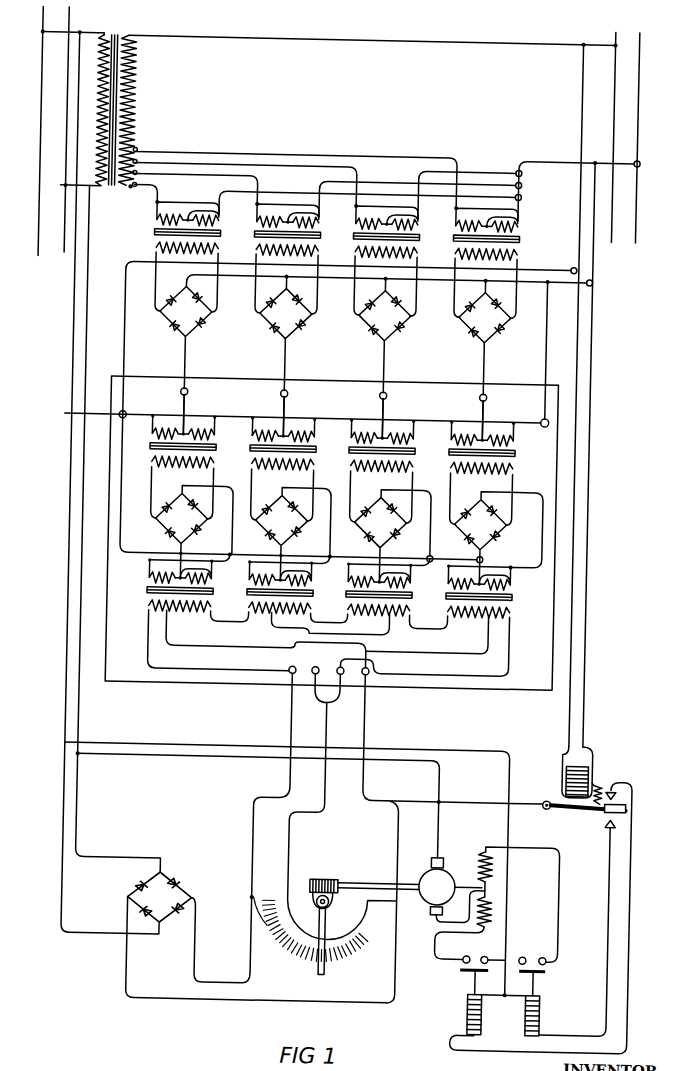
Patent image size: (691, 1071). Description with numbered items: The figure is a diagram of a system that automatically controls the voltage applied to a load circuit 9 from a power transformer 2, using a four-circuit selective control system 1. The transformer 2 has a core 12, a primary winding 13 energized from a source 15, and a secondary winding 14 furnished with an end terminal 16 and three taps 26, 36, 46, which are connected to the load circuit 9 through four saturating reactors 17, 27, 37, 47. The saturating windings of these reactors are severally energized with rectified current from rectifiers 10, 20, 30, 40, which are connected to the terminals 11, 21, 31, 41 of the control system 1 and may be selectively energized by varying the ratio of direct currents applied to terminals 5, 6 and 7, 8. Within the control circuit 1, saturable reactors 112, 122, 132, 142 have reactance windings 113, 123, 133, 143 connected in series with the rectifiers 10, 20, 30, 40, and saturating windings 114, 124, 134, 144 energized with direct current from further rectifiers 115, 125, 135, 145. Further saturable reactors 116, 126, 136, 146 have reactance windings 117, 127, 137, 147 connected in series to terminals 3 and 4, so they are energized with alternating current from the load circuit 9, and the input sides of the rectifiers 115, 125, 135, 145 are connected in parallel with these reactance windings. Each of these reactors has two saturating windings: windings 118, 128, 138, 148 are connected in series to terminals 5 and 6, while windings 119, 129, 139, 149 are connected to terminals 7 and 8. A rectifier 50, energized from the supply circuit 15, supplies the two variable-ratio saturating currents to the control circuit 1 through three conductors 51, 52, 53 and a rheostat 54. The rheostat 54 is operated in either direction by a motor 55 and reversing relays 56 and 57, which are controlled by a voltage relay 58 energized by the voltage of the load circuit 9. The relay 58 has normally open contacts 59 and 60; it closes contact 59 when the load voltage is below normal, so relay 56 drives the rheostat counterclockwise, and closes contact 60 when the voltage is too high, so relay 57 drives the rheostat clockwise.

The selective control system 1 is at (598, 346).
The power transformer 2 is at (114, 33).
The terminal 3 is at (294, 417).
The terminal 4 is at (547, 419).
The terminal 5 is at (289, 680).
The terminal 6 is at (315, 677).
The terminal 7 is at (348, 679).
The terminal 8 is at (373, 679).
The load circuit 9 is at (632, 136).
The rectifier 10 is at (185, 337).
The terminal 11 is at (187, 395).
The core 12 is at (121, 196).
The primary winding 13 is at (89, 90).
The secondary winding 14 is at (368, 115).
The source 15 is at (26, 131).
The end terminal 16 is at (130, 188).
The saturating reactor 17 is at (337, 253).
The rectifier 20 is at (285, 339).
The terminal 21 is at (287, 395).
The tap 26 is at (130, 176).
The saturating reactor 27 is at (387, 248).
The rectifier 30 is at (384, 341).
The terminal 31 is at (386, 395).
The tap 36 is at (130, 165).
The saturating reactor 37 is at (437, 242).
The rectifier 40 is at (484, 343).
The terminal 41 is at (486, 395).
The tap 46 is at (130, 153).
The saturating reactor 47 is at (546, 239).
The rectifier 50 is at (159, 896).
The conductor 51 is at (241, 828).
The conductor 52 is at (344, 807).
The conductor 53 is at (336, 838).
The rheostat 54 is at (335, 916).
The motor 55 is at (488, 904).
The reversing relay 56 is at (545, 932).
The reversing relay 57 is at (536, 916).
The voltage relay 58 is at (627, 755).
The contact 59 is at (625, 819).
The contact 60 is at (627, 790).
The saturable reactor 112 is at (149, 450).
The reactance winding 113 is at (180, 435).
The saturating winding 114 is at (182, 493).
The rectifier 115 is at (193, 532).
The saturable reactor 116 is at (150, 599).
The reactance winding 117 is at (191, 575).
The saturating winding 118 is at (150, 606).
The saturating winding 119 is at (150, 659).
The saturable reactor 122 is at (269, 443).
The reactance winding 123 is at (280, 434).
The saturating winding 124 is at (282, 495).
The rectifier 125 is at (292, 534).
The saturable reactor 126 is at (275, 584).
The reactance winding 127 is at (288, 576).
The saturating winding 128 is at (252, 621).
The saturating winding 129 is at (299, 620).
The saturable reactor 132 is at (392, 445).
The reactance winding 133 is at (379, 436).
The saturating winding 134 is at (381, 497).
The rectifier 135 is at (392, 536).
The saturable reactor 136 is at (394, 587).
The reactance winding 137 is at (402, 563).
The saturating winding 138 is at (404, 629).
The saturating winding 139 is at (365, 619).
The saturable reactor 142 is at (519, 453).
The reactance winding 143 is at (479, 436).
The saturating winding 144 is at (481, 499).
The rectifier 145 is at (498, 538).
The saturable reactor 146 is at (518, 597).
The reactance winding 147 is at (493, 578).
The saturating winding 148 is at (472, 617).
The saturating winding 149 is at (516, 610).